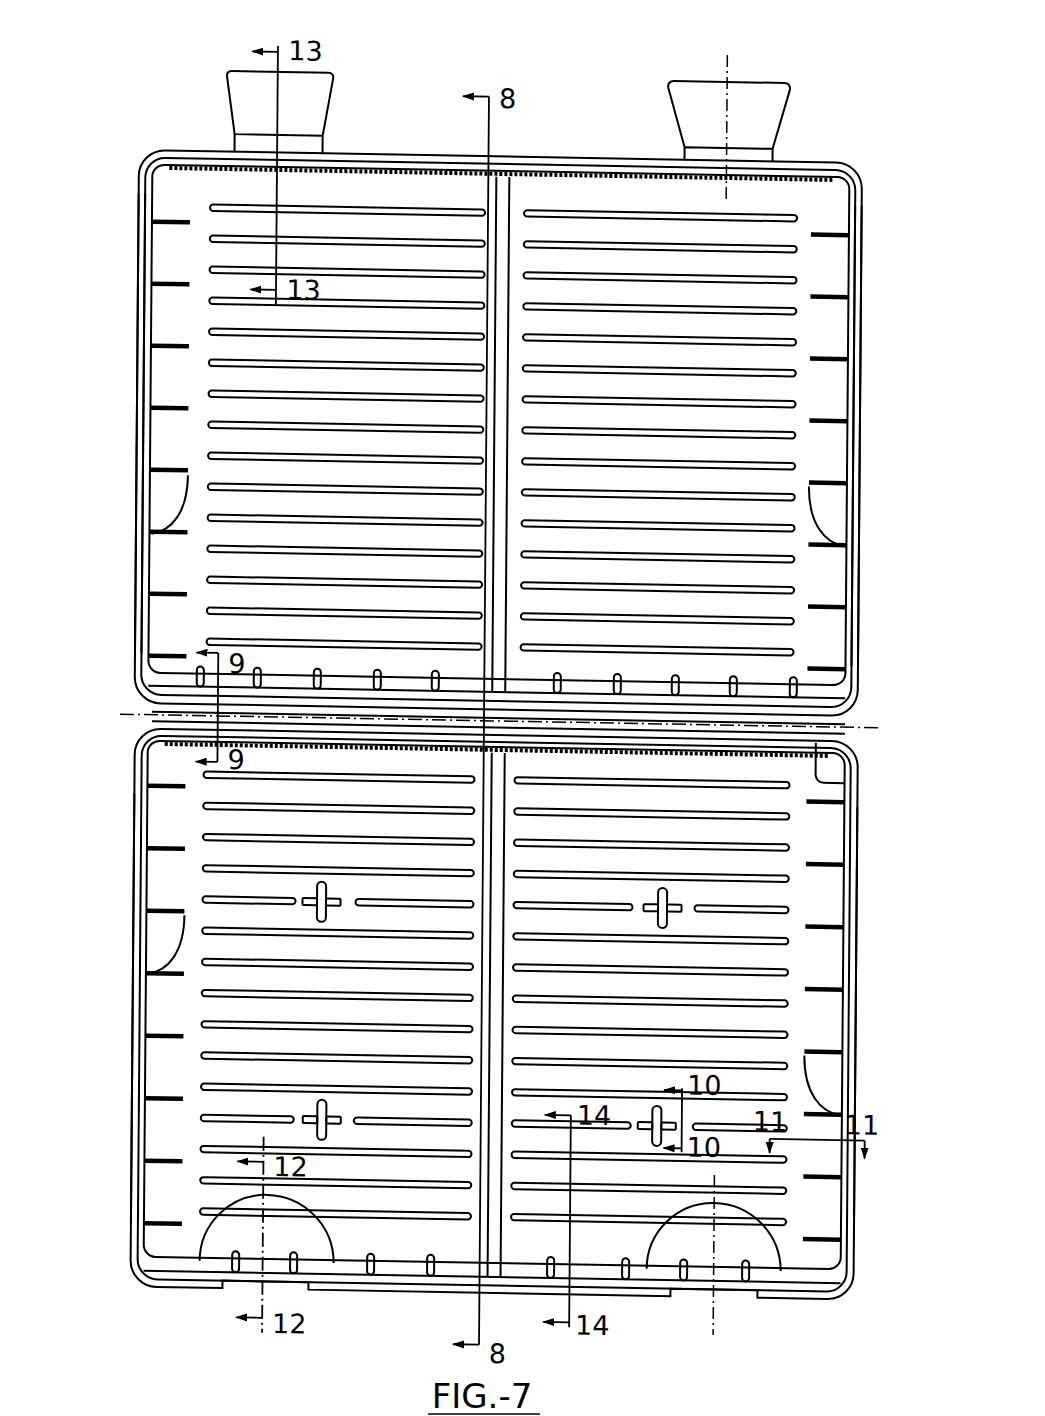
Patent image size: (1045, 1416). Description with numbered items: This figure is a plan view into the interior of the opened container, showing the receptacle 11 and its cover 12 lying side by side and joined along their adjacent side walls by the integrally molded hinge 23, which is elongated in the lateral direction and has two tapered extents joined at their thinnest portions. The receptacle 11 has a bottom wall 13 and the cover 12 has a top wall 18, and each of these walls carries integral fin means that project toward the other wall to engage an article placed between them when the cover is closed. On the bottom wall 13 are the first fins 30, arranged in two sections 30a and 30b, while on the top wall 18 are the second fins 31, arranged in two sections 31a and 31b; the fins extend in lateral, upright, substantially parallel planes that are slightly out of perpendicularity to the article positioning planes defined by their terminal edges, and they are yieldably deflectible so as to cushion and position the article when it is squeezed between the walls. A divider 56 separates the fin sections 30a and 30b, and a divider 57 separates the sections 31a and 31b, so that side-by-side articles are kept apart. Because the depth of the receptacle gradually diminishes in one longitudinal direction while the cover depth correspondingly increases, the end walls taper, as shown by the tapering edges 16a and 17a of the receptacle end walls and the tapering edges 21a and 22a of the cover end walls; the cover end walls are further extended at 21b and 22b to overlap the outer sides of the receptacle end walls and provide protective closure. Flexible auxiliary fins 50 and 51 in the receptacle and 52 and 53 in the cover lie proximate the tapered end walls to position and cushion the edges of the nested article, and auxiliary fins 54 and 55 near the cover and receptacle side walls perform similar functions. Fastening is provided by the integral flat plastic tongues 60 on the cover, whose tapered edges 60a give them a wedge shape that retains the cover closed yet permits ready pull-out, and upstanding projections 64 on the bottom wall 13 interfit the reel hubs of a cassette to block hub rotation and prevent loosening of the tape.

The receptacle 11 is at (118, 1149).
The cover 12 is at (882, 188).
The bottom wall 13 is at (757, 950).
The tapering edge 16a is at (856, 885).
The tapering edge 17a is at (137, 1007).
The top wall 18 is at (741, 374).
The tapering edge 21a is at (144, 271).
The end wall extension 21b is at (138, 246).
The tapering edge 22a is at (849, 323).
The end wall extension 22b is at (858, 280).
The hinge 23 is at (845, 777).
The first fins 30 is at (227, 1091).
The first fin section 30a is at (645, 1215).
The first fin section 30b is at (425, 1227).
The second fins 31 is at (222, 372).
The second fin section 31a is at (591, 230).
The second fin section 31b is at (374, 247).
The auxiliary fin 50 is at (838, 1097).
The auxiliary fin 51 is at (162, 941).
The auxiliary fin 52 is at (836, 503).
The auxiliary fin 53 is at (161, 498).
The auxiliary fin 54 is at (675, 672).
The auxiliary fin 55 is at (555, 1256).
The divider 56 is at (496, 937).
The divider 57 is at (496, 460).
The tongue 60 is at (238, 97).
The tapered edges 60a is at (686, 92).
The upstanding projections 64 is at (320, 887).